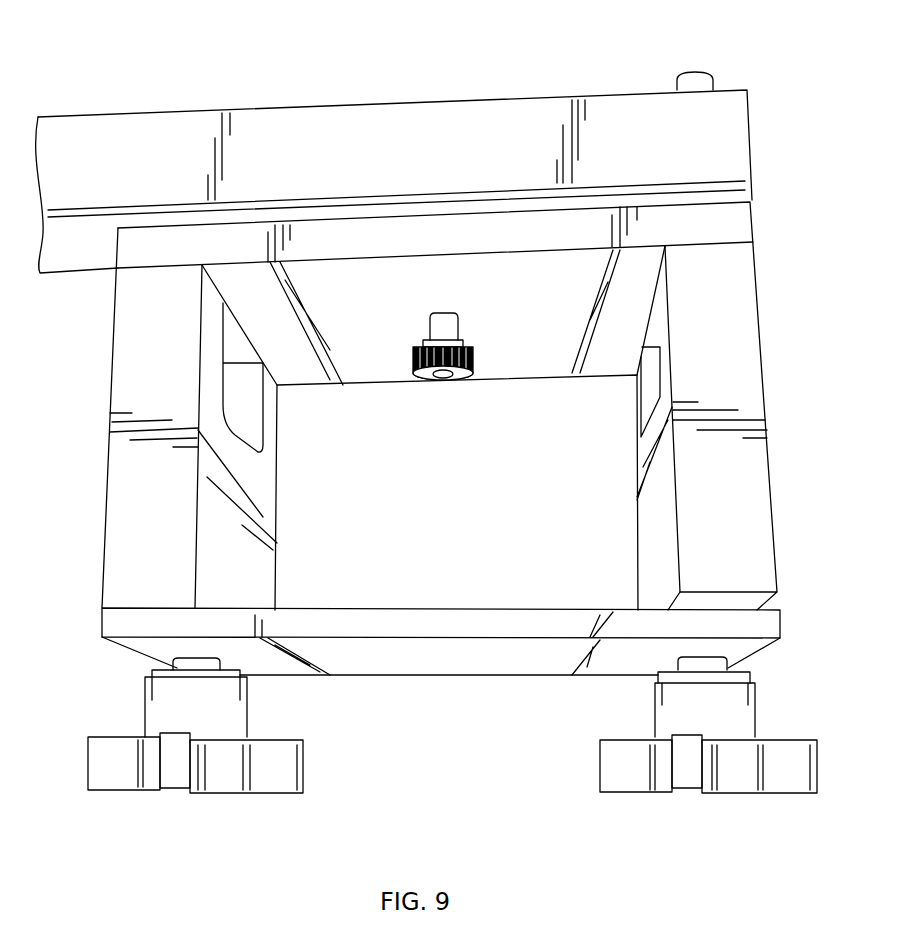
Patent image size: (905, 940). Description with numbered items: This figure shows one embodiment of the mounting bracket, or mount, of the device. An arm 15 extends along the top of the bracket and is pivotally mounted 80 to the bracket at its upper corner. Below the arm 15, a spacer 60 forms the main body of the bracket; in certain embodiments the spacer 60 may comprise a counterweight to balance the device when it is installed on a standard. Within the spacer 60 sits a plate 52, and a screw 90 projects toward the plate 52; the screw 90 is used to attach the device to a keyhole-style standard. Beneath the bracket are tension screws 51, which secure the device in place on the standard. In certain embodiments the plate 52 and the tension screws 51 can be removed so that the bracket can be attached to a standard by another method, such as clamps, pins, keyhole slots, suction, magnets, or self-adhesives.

The arm 15 is at (402, 162).
The pivotal mount 80 is at (710, 64).
The spacer 60 is at (750, 390).
The plate 52 is at (455, 589).
The screw 90 is at (462, 380).
The tension screw 51 is at (120, 778).